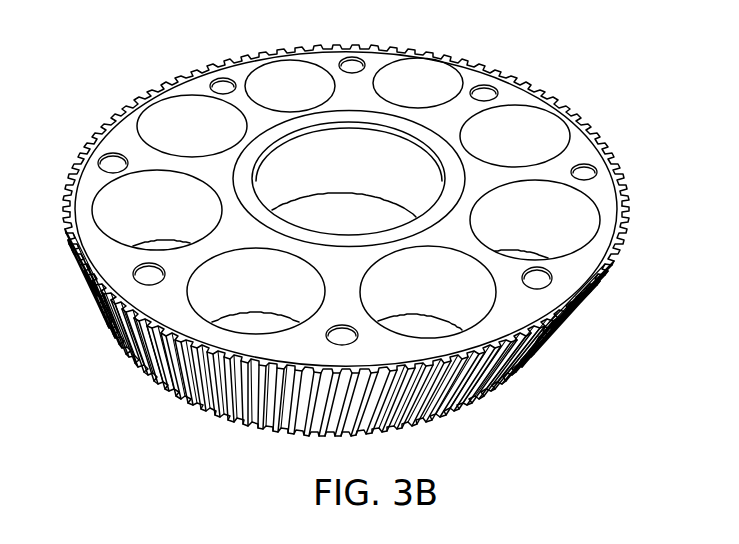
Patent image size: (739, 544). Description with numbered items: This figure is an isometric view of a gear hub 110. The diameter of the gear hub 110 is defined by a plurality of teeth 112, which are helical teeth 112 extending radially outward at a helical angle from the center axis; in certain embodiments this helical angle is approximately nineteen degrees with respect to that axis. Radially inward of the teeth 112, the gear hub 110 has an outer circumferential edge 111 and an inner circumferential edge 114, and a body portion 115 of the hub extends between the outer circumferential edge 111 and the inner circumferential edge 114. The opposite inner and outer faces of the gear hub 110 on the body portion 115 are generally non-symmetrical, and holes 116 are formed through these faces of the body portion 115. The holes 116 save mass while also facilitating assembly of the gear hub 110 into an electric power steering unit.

The gear hub 110 is at (375, 227).
The outer circumferential edge 111 is at (504, 82).
The teeth 112 is at (628, 223).
The inner circumferential edge 114 is at (393, 150).
The body portion 115 is at (495, 258).
The holes 116 is at (217, 293).